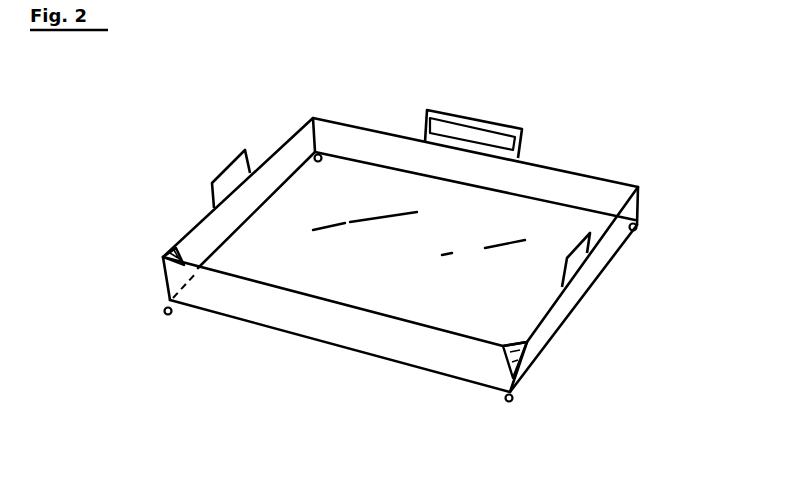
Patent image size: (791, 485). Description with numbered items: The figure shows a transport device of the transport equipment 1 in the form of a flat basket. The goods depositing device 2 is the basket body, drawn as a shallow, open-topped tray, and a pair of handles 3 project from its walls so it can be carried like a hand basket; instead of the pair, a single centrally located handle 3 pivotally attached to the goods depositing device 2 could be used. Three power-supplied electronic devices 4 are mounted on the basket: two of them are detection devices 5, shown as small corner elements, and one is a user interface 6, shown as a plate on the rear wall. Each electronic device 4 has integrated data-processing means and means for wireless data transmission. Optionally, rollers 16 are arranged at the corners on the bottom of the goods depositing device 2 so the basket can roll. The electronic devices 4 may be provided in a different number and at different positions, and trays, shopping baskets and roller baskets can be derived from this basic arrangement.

The transport equipment 1 is at (565, 132).
The goods depositing device 2 is at (400, 265).
The handle 3 is at (233, 162).
The electronic device 4 is at (347, 224).
The detection device 5 is at (165, 263).
The user interface 6 is at (452, 130).
The roller 16 is at (167, 316).